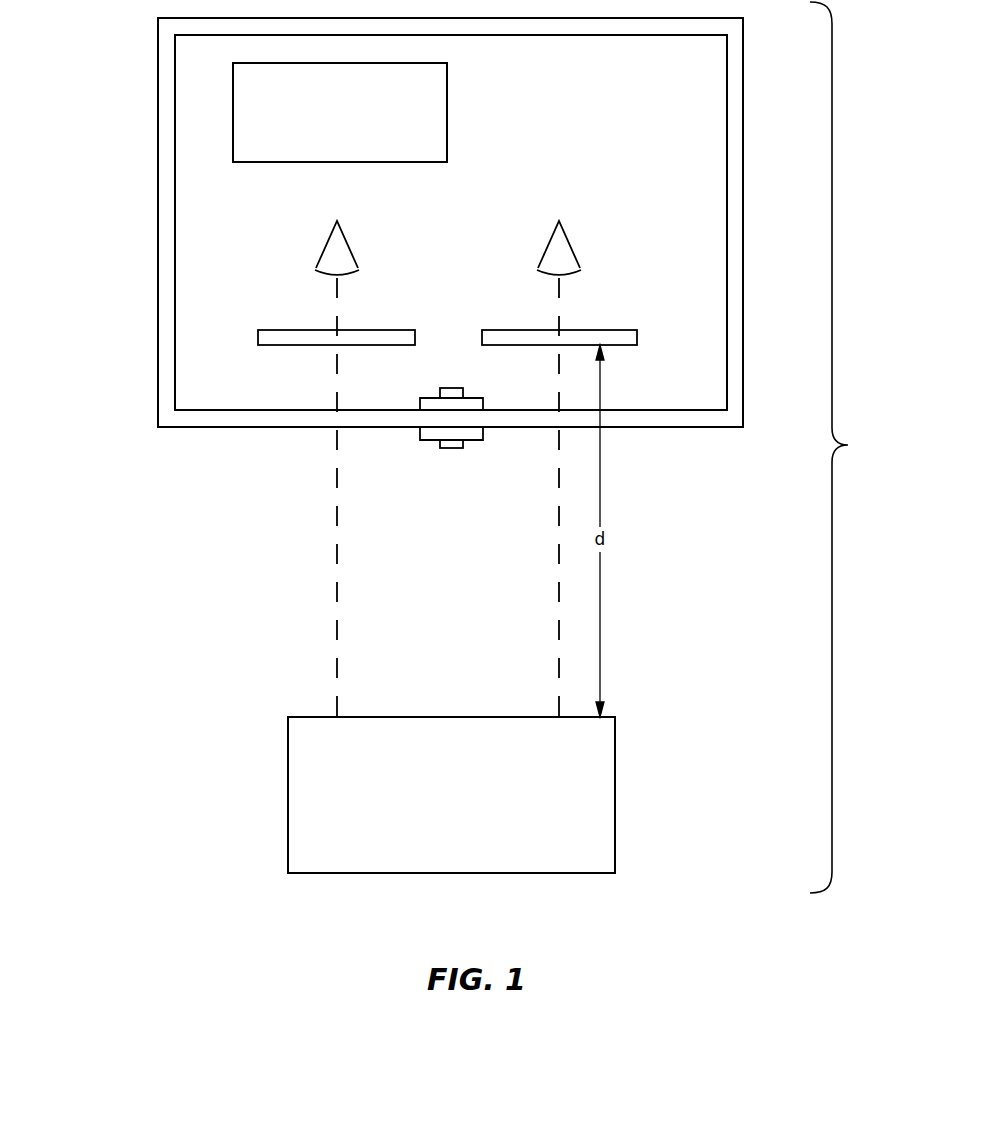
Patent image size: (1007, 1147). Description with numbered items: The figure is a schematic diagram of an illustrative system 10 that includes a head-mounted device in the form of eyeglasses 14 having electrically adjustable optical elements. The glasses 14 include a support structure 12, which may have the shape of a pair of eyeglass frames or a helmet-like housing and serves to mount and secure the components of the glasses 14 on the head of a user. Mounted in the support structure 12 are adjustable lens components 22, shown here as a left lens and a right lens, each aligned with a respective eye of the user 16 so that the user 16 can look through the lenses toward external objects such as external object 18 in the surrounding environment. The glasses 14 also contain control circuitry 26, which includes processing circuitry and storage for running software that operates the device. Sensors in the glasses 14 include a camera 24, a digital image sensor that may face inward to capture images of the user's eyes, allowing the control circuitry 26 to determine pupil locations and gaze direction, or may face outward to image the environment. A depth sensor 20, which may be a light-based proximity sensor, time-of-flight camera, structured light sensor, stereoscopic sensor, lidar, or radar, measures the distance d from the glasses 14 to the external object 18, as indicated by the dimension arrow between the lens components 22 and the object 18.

The system 10 is at (843, 447).
The support structure 12 is at (158, 99).
The eyeglasses 14 is at (108, 326).
The user 16 is at (347, 240).
The external object 18 is at (615, 780).
The depth sensor 20 is at (450, 450).
The adjustable lens components 22 is at (258, 336).
The camera 24 is at (430, 396).
The control circuitry 26 is at (447, 105).